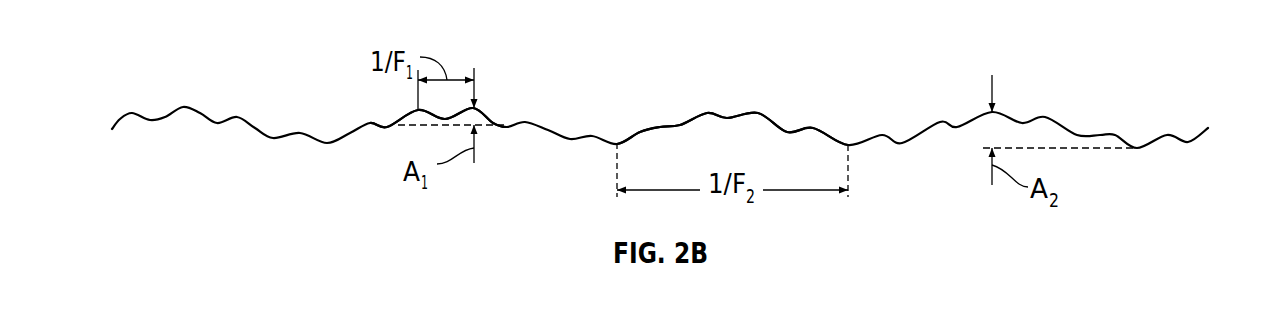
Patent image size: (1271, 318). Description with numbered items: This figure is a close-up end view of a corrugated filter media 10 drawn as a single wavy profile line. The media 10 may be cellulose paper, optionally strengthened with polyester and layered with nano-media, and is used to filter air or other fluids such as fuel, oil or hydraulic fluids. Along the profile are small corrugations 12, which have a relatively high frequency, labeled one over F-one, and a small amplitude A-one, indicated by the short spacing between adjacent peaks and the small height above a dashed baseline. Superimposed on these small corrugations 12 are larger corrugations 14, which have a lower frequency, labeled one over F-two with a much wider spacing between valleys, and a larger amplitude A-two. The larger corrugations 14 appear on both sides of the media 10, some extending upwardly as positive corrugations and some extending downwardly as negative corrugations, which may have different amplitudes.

The corrugated filter media 10 is at (843, 47).
The small corrugations 12 is at (417, 110).
The larger corrugations 14 is at (733, 120).